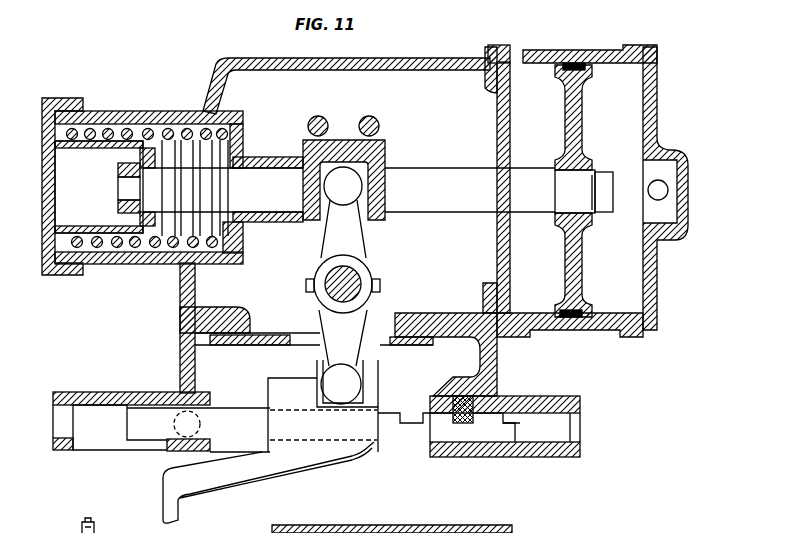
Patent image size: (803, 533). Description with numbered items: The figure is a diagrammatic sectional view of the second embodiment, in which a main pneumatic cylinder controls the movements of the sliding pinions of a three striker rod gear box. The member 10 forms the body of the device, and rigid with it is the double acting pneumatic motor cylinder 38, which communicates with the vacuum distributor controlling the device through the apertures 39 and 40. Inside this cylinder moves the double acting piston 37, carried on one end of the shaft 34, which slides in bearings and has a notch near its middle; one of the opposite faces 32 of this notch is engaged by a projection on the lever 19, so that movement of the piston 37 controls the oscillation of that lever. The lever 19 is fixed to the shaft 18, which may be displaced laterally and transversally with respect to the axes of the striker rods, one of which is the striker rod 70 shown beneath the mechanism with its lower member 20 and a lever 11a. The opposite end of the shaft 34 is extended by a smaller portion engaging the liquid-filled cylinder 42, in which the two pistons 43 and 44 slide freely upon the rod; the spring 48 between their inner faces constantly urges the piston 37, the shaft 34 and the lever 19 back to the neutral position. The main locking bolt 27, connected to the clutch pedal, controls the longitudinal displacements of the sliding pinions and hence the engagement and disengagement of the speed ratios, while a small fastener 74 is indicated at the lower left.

The member 10 is at (632, 337).
The lever 11a is at (312, 448).
The shaft 18 is at (345, 285).
The lever 19 is at (355, 320).
The lower crosshead 20 is at (355, 386).
The main locking bolt 27 is at (470, 405).
The face of notch 32 is at (380, 150).
The shaft 34 is at (418, 182).
The double acting piston 37 is at (585, 136).
The double acting pneumatic motor cylinder 38 is at (590, 330).
The aperture 39 is at (665, 190).
The aperture 40 is at (518, 50).
The cylinder 42 is at (130, 262).
The piston 43 is at (280, 222).
The piston 44 is at (85, 148).
The spring 48 is at (148, 130).
The striker rod 70 is at (430, 430).
The fastener 74 is at (107, 525).